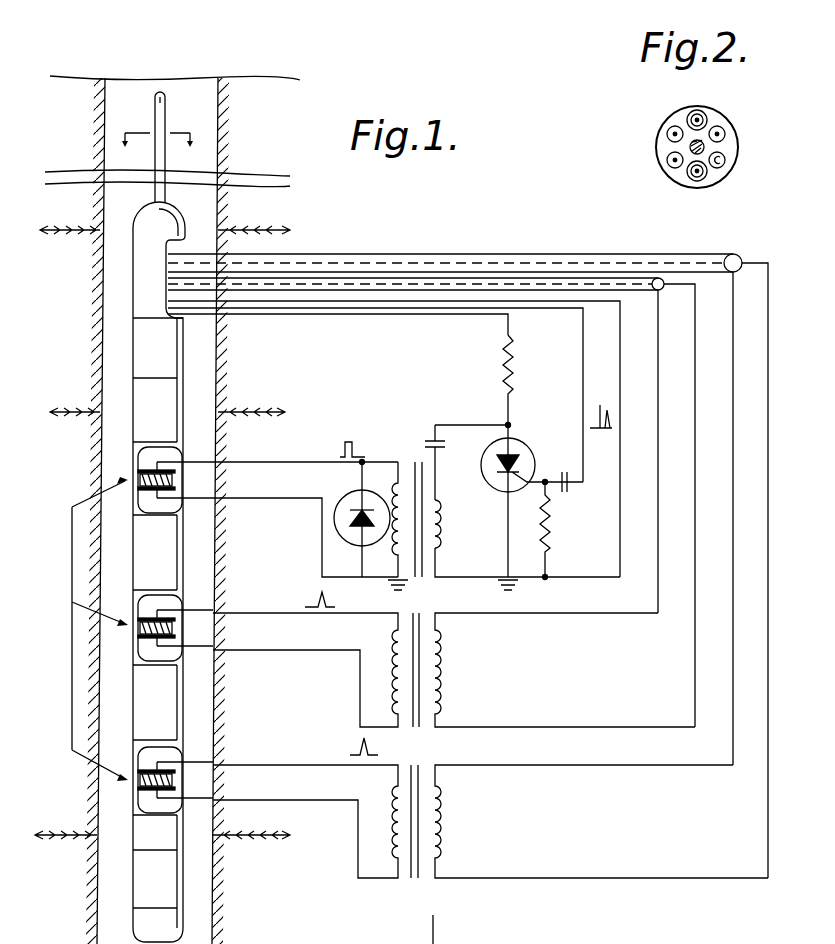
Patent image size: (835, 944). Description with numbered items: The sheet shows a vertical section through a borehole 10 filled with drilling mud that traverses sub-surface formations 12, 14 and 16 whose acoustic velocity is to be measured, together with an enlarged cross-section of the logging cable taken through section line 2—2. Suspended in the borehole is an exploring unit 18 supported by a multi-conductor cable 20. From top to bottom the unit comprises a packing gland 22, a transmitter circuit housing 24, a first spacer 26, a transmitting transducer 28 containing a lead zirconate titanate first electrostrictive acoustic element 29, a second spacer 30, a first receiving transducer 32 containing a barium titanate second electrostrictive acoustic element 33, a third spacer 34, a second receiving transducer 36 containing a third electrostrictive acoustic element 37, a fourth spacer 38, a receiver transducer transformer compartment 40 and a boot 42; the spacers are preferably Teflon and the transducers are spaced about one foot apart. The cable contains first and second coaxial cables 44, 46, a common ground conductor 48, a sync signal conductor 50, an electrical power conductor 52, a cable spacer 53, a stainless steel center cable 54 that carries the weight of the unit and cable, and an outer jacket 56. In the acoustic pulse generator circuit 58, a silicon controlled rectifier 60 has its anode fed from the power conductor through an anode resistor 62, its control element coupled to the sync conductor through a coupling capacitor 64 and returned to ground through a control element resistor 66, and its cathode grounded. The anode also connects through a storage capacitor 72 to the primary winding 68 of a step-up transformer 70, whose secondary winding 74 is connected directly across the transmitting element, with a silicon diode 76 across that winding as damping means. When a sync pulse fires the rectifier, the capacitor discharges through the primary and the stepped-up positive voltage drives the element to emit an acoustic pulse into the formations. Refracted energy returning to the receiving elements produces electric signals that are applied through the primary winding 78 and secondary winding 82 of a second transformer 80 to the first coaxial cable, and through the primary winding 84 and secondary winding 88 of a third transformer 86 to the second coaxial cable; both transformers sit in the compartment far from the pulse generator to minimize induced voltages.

In FIG. 1, the section line 2 is at (162, 127).
In FIG. 1, the borehole 10 is at (224, 142).
In FIG. 1, the sub-surface formation 12 is at (47, 333).
In FIG. 1, the sub-surface formation 14 is at (40, 623).
In FIG. 1, the sub-surface formation 16 is at (47, 903).
In FIG. 1, the exploring unit 18 is at (182, 332).
In FIG. 1, the multi-conductor cable 20 is at (173, 200).
In FIG. 1, the packing gland 22 is at (136, 232).
In FIG. 1, the transmitter circuit housing 24 is at (133, 334).
In FIG. 1, the first spacer 26 is at (133, 396).
In FIG. 1, the transmitting transducer 28 is at (133, 470).
In FIG. 1, the first electrostrictive acoustic element 29 is at (176, 485).
In FIG. 1, the second spacer 30 is at (133, 562).
In FIG. 1, the first receiving transducer 32 is at (179, 600).
In FIG. 1, the second electrostrictive acoustic element 33 is at (176, 632).
In FIG. 1, the third spacer 34 is at (133, 718).
In FIG. 1, the second receiving transducer 36 is at (179, 752).
In FIG. 1, the third electrostrictive acoustic element 37 is at (176, 784).
In FIG. 1, the fourth spacer 38 is at (180, 845).
In FIG. 1, the receiver transducer transformer compartment 40 is at (150, 874).
In FIG. 1, the boot 42 is at (165, 932).
In FIG. 1, the first coaxial cable 44 is at (651, 294).
In FIG. 2, the first coaxial cable 44 is at (707, 118).
In FIG. 1, the second coaxial cable 46 is at (722, 275).
In FIG. 2, the second coaxial cable 46 is at (693, 182).
In FIG. 1, the common ground conductor 48 is at (609, 303).
In FIG. 2, the common ground conductor 48 is at (672, 166).
In FIG. 1, the sync signal conductor 50 is at (555, 310).
In FIG. 2, the sync signal conductor 50 is at (667, 134).
In FIG. 1, the electrical power conductor 52 is at (367, 316).
In FIG. 2, the electrical power conductor 52 is at (726, 134).
In FIG. 2, the cable spacer 53 is at (726, 160).
In FIG. 2, the stainless steel center cable 54 is at (691, 148).
In FIG. 1, the outer jacket 56 is at (155, 197).
In FIG. 2, the outer jacket 56 is at (728, 178).
In FIG. 1, the acoustic pulse generator circuit 58 is at (463, 527).
In FIG. 1, the silicon controlled rectifier 60 is at (530, 446).
In FIG. 1, the anode resistor 62 is at (504, 380).
In FIG. 1, the coupling capacitor 64 is at (572, 490).
In FIG. 1, the control element resistor 66 is at (550, 548).
In FIG. 1, the primary winding 68 is at (440, 542).
In FIG. 1, the step-up transformer 70 is at (420, 582).
In FIG. 1, the capacitor 72 is at (445, 440).
In FIG. 1, the secondary winding 74 is at (396, 498).
In FIG. 1, the silicon diode 76 is at (350, 498).
In FIG. 1, the primary winding 78 is at (395, 660).
In FIG. 1, the second transformer 80 is at (416, 735).
In FIG. 1, the secondary winding 82 is at (441, 668).
In FIG. 1, the primary winding 84 is at (395, 805).
In FIG. 1, the third transformer 86 is at (412, 884).
In FIG. 1, the secondary winding 88 is at (441, 836).